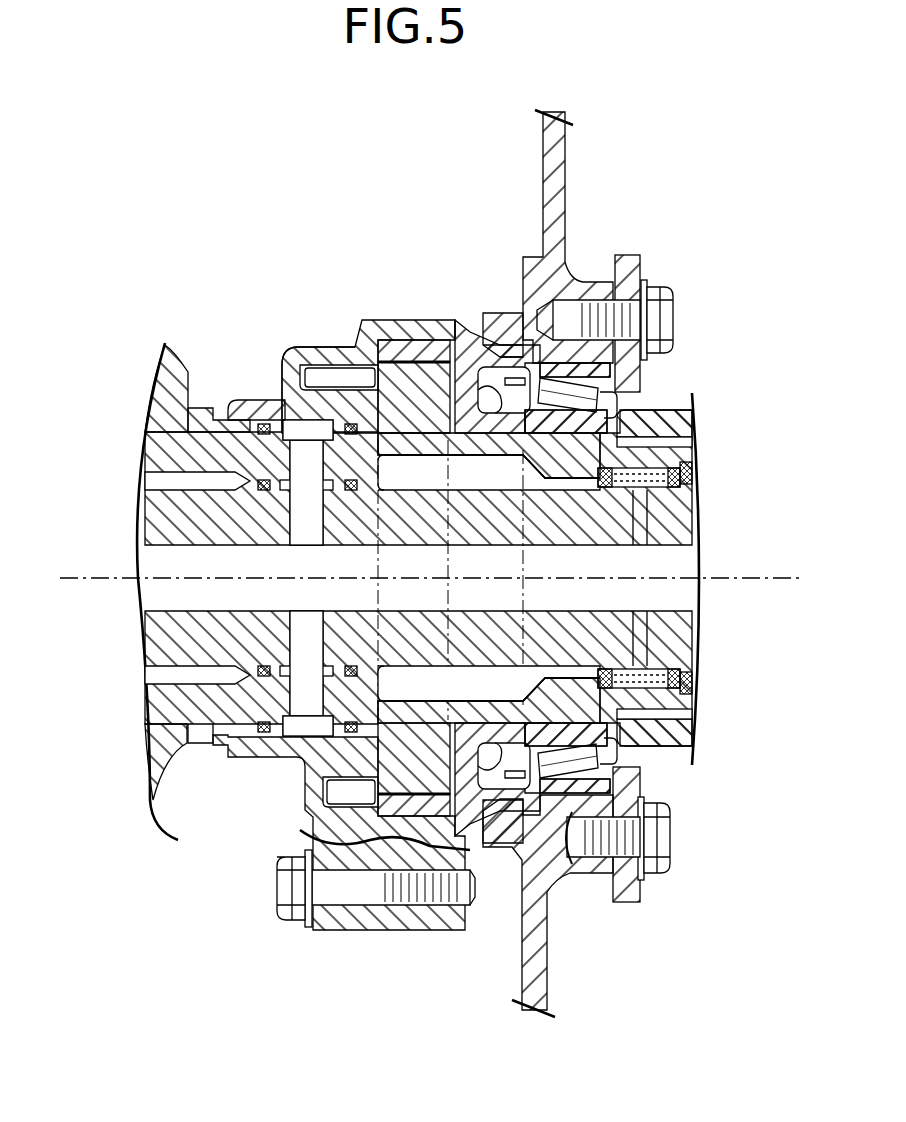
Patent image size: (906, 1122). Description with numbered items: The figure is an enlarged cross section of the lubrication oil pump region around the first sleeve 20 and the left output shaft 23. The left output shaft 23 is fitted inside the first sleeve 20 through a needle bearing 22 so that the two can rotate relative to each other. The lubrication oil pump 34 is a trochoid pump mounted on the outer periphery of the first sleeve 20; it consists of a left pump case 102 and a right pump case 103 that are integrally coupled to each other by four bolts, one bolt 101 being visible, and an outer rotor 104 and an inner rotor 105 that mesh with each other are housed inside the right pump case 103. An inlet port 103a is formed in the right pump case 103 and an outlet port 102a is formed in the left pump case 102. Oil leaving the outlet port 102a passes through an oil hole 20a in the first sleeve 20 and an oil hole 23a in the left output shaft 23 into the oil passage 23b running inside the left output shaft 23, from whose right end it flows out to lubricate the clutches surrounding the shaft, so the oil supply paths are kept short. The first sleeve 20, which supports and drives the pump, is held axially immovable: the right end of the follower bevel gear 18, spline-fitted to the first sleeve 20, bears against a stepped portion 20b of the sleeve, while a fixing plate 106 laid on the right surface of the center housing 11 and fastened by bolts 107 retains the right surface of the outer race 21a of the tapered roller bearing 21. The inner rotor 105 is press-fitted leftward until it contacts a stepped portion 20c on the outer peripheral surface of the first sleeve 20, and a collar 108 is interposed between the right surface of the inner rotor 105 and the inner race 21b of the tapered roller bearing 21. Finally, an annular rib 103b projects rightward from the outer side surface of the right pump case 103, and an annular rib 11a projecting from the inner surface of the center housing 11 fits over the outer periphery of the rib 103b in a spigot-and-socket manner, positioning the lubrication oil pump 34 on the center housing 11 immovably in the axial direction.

The center housing 11 is at (567, 176).
The annular rib 11a is at (502, 317).
The follower bevel gear 18 is at (145, 392).
The first sleeve 20 is at (428, 683).
The oil hole 20a is at (294, 445).
The stepped portion 20b is at (186, 420).
The stepped portion 20c is at (489, 578).
The tapered roller bearing 21 is at (578, 358).
The outer race 21a is at (645, 376).
The inner race 21b is at (553, 428).
The needle bearing 22 is at (657, 481).
The left output shaft 23 is at (178, 487).
The oil hole 23a is at (296, 518).
The oil passage 23b is at (694, 556).
The lubrication oil pump 34 is at (398, 280).
The bolt 101 is at (283, 888).
The left pump case 102 is at (303, 343).
The outlet port 102a is at (313, 377).
The right pump case 103 is at (413, 316).
The inlet port 103a is at (523, 480).
The annular rib 103b is at (518, 320).
The outer rotor 104 is at (405, 338).
The inner rotor 105 is at (342, 367).
The fixing plate 106 is at (627, 256).
The bolt 107 is at (668, 320).
The collar 108 is at (470, 335).